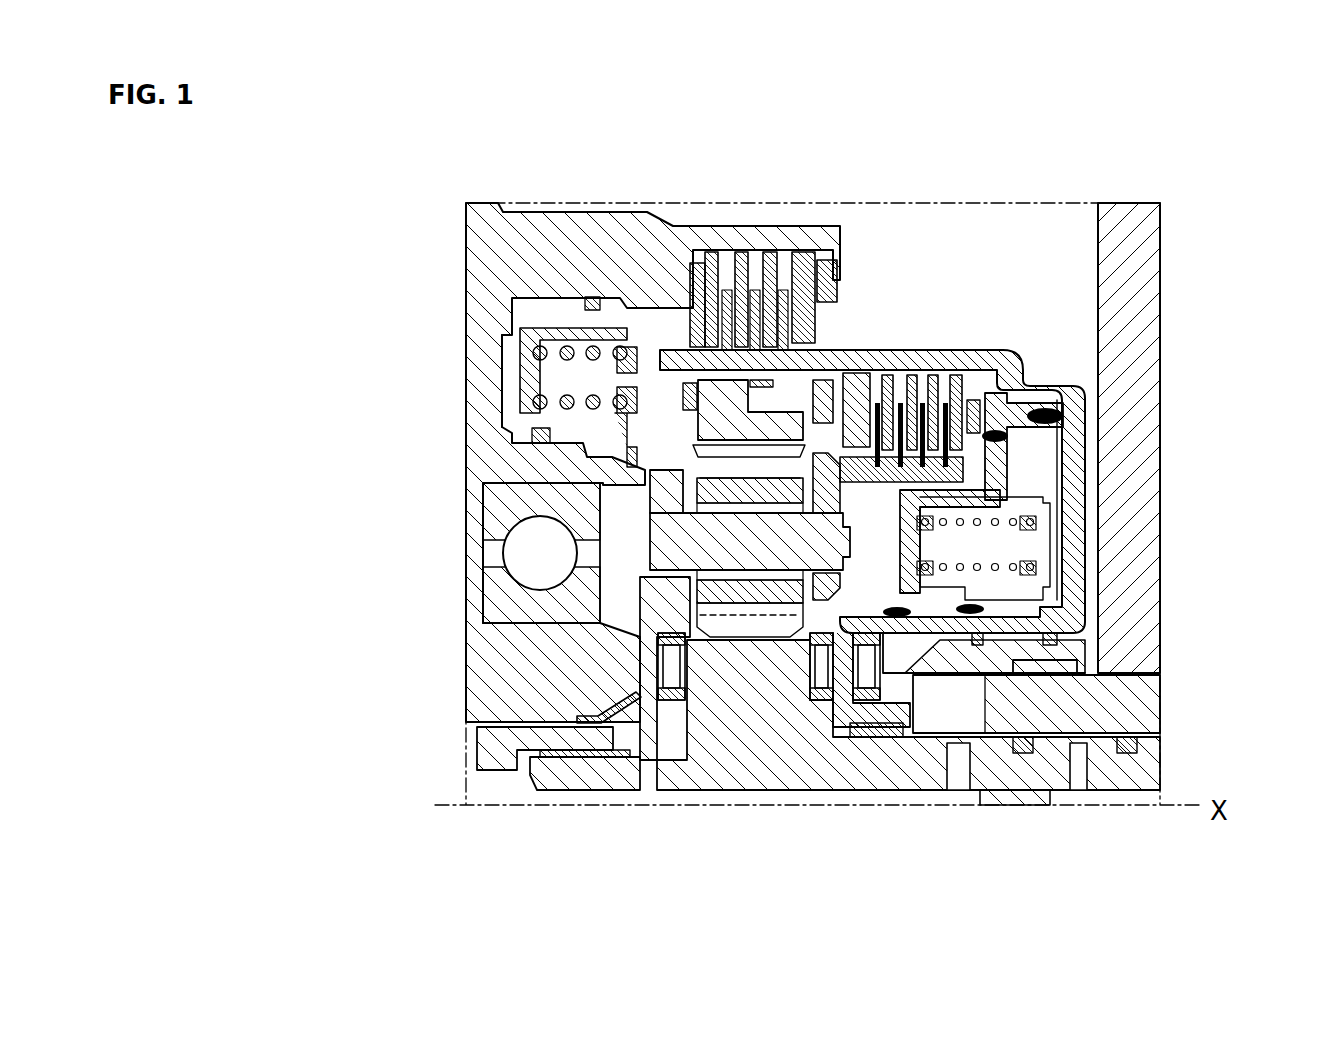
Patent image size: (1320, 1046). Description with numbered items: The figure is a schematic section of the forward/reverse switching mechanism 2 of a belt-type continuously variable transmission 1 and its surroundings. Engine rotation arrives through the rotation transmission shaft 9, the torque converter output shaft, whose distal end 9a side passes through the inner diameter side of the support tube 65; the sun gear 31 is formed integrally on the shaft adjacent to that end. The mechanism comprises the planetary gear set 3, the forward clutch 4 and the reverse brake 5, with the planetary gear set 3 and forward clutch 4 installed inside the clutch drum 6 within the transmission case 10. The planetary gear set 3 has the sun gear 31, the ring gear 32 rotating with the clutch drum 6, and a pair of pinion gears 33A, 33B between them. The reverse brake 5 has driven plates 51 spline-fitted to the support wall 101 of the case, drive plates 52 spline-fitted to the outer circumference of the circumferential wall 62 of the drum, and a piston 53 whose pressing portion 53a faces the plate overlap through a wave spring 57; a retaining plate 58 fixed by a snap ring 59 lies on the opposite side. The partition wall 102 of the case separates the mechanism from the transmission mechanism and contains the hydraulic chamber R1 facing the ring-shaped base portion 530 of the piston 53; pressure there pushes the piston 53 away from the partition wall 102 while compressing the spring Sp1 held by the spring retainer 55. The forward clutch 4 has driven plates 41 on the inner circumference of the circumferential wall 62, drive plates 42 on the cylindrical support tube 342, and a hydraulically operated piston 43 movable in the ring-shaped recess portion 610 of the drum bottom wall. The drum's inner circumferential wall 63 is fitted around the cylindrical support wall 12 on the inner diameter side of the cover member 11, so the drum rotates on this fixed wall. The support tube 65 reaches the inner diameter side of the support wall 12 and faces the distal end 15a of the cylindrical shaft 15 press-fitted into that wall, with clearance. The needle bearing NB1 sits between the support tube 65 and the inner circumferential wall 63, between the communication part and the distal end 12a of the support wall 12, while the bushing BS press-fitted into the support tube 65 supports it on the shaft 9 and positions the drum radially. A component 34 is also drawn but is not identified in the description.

The belt-type continuously variable transmission 1 is at (325, 172).
The forward/reverse switching mechanism 2 is at (945, 193).
The planetary gear set 3 is at (790, 396).
The forward clutch 4 is at (953, 372).
The reverse brake 5 is at (764, 217).
The clutch drum 6 is at (1078, 392).
The rotation transmission shaft 9 is at (1165, 768).
The distal end of the rotation transmission shaft 9a is at (528, 773).
The transmission case 10 is at (475, 197).
The cover member 11 is at (1128, 206).
The cylindrical support wall 12 is at (993, 667).
The distal end of the support wall 12a is at (883, 662).
The cylindrical shaft 15 is at (1145, 706).
The distal end of the cylindrical shaft 15a is at (913, 693).
The sun gear 31 is at (700, 628).
The ring gear 32 is at (703, 430).
The pinion gear 33A is at (836, 556).
The pinion gear 33B is at (838, 497).
The bearing 34 is at (632, 620).
The driven plates 41 is at (990, 393).
The drive plates 42 is at (937, 375).
The piston 43 is at (975, 400).
The driven plates 51 is at (740, 252).
The drive plates 52 is at (755, 290).
The piston 53 is at (698, 262).
The pressing portion 53a is at (690, 298).
The spring retainer 55 is at (615, 430).
The wave spring 57 is at (700, 265).
The retaining plate 58 is at (805, 252).
The snap ring 59 is at (828, 262).
The outer circumferential wall 62 is at (898, 362).
The inner circumferential wall 63 is at (927, 618).
The support tube 65 is at (862, 737).
The support wall 101 is at (782, 226).
The partition wall 102 is at (502, 340).
The cylindrical support tube 342 is at (563, 740).
The ring-shaped base portion 530 is at (525, 385).
The ring-shaped recess portion 610 is at (488, 668).
The spring Sp1 is at (567, 350).
The hydraulic chamber R1 is at (567, 369).
The needle bearing NB1 is at (862, 633).
The bushing BS is at (577, 760).